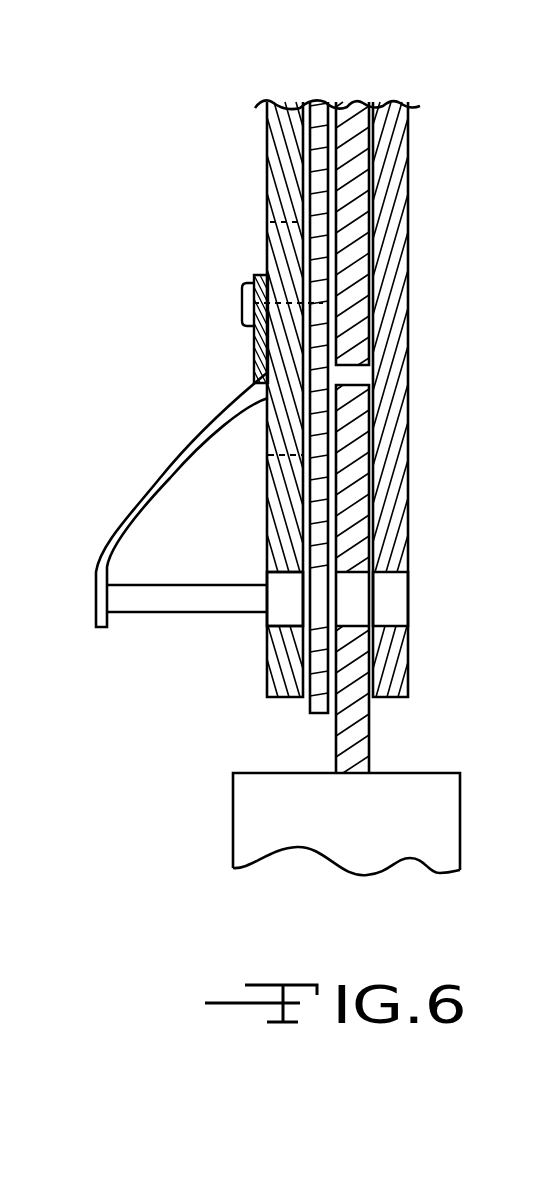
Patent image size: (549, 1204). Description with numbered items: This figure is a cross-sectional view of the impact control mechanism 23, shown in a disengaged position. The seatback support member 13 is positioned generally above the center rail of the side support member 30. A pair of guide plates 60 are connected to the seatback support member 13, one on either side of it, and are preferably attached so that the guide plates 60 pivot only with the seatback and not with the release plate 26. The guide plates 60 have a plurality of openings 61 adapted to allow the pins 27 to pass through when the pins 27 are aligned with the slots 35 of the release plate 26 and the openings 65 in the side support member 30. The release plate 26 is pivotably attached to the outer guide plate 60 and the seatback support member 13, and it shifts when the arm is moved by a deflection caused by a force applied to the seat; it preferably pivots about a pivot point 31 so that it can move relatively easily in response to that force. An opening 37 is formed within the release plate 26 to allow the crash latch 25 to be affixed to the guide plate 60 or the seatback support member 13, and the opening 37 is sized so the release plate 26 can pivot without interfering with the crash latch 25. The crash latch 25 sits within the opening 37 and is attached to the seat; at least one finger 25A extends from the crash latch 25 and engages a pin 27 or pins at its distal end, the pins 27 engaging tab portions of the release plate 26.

The impact control mechanism 23 is at (165, 173).
The pivot point 31 is at (267, 134).
The opening 37 is at (285, 262).
The crash latch 25 is at (256, 335).
The finger 25A is at (92, 566).
The pin 27 is at (167, 600).
The slot 35 is at (287, 590).
The release plate 26 is at (277, 655).
The guide plate 60 is at (319, 100).
The opening 61 is at (322, 590).
The seatback support member 13 is at (346, 102).
The opening 65 is at (355, 605).
The side support member 30 is at (358, 752).